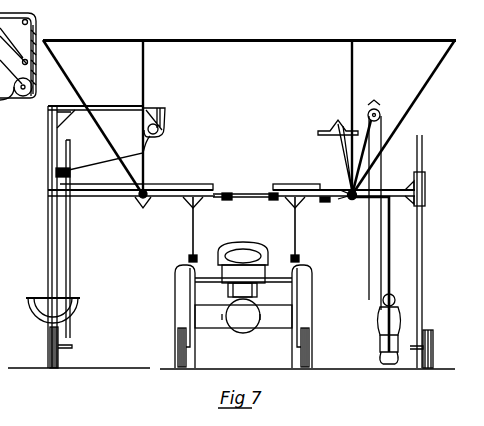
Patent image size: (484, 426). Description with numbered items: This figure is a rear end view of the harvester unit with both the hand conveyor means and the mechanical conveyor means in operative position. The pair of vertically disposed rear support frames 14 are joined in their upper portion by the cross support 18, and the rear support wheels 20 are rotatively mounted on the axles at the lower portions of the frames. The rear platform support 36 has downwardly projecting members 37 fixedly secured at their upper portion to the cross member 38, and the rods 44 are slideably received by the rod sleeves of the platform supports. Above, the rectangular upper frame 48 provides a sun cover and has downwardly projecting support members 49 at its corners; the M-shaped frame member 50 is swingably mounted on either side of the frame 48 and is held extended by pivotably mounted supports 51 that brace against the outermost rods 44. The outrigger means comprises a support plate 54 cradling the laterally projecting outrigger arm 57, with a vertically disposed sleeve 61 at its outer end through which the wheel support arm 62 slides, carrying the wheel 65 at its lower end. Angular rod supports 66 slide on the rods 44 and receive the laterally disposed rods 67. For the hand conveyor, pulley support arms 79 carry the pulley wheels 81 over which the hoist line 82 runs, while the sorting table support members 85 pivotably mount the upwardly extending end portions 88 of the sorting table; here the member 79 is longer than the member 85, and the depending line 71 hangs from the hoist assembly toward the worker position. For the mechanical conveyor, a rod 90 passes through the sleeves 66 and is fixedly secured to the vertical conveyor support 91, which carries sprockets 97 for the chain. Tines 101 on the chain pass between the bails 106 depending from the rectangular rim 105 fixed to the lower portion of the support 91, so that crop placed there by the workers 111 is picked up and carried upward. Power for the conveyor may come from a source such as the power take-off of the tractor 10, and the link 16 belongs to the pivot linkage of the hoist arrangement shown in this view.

The tractor 10 is at (264, 250).
The rear support frame 14 is at (178, 300).
The pivot link 16 is at (20, 68).
The cross support 18 is at (288, 280).
The rear support wheel 20 is at (178, 353).
The rear platform support 36 is at (256, 197).
The downwardly projecting member 37 is at (193, 226).
The cross member 38 is at (250, 201).
The rod 44 is at (144, 66).
The upper frame 48 is at (235, 40).
The support member 49 is at (101, 158).
The M-shaped frame member 50 is at (88, 39).
The pivotably mounted support 51 is at (62, 70).
The support plate 54 is at (187, 188).
The outrigger arm 57 is at (182, 186).
The vertically disposed sleeve 61 is at (425, 186).
The wheel support arm 62 is at (68, 249).
The wheel 65 is at (62, 357).
The angular rod support 66 is at (143, 199).
The laterally disposed rod 67 is at (346, 200).
The hoist cable 71 is at (391, 248).
The pulley support arm 79 is at (362, 123).
The pulley wheel 81 is at (375, 109).
The hoist line 82 is at (384, 173).
The sorting table support member 85 is at (343, 158).
The upwardly extending end portion 88 is at (333, 124).
The rod 90 is at (106, 198).
The vertical conveyor support 91 is at (50, 273).
The sprocket 97 is at (38, 13).
The tine 101 is at (44, 212).
The rectangular rim 105 is at (32, 298).
The bail 106 is at (40, 319).
The worker 111 is at (376, 312).